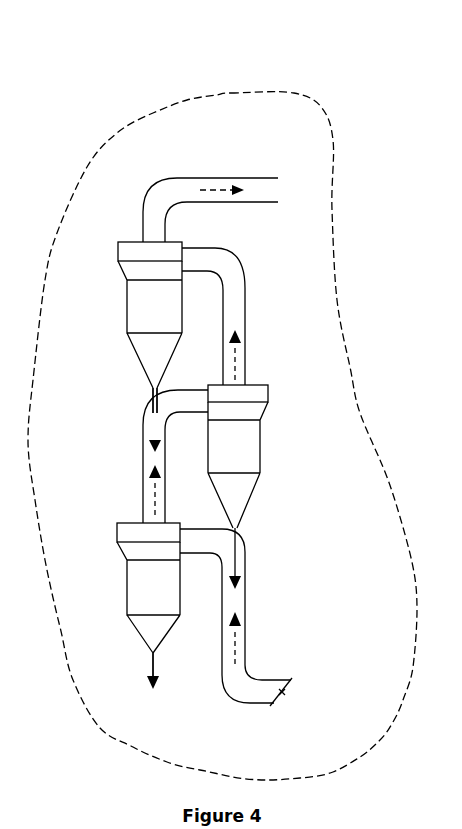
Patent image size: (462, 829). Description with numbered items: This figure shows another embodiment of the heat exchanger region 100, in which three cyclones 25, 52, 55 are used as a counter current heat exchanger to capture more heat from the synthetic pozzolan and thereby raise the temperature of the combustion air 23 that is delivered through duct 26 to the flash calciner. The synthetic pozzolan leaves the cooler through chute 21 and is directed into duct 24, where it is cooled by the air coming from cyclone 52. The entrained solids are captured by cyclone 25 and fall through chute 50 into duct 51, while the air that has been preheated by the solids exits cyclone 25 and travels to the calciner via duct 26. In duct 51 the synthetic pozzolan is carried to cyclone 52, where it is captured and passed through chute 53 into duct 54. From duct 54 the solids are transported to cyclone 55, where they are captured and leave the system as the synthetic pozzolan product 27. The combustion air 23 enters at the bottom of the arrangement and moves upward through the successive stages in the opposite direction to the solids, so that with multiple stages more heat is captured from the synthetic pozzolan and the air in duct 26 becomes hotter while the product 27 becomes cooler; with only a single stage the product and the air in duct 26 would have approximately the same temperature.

The heat exchanger region 100 is at (245, 93).
The synthetic pozzolan chute 21 is at (247, 317).
The combustion air 23 is at (305, 692).
The duct 24 is at (243, 269).
The cyclone 25 is at (135, 242).
The duct 26 is at (257, 178).
The synthetic pozzolan product 27 is at (155, 692).
The chute 50 is at (153, 388).
The duct 51 is at (143, 462).
The cyclone 52 is at (270, 386).
The chute 53 is at (238, 524).
The duct 54 is at (248, 610).
The cyclone 55 is at (133, 523).